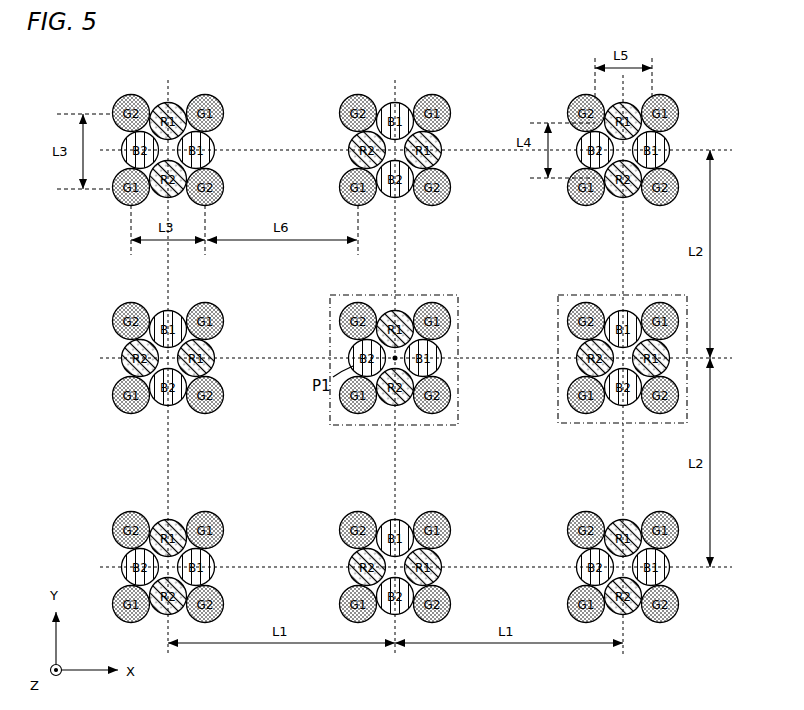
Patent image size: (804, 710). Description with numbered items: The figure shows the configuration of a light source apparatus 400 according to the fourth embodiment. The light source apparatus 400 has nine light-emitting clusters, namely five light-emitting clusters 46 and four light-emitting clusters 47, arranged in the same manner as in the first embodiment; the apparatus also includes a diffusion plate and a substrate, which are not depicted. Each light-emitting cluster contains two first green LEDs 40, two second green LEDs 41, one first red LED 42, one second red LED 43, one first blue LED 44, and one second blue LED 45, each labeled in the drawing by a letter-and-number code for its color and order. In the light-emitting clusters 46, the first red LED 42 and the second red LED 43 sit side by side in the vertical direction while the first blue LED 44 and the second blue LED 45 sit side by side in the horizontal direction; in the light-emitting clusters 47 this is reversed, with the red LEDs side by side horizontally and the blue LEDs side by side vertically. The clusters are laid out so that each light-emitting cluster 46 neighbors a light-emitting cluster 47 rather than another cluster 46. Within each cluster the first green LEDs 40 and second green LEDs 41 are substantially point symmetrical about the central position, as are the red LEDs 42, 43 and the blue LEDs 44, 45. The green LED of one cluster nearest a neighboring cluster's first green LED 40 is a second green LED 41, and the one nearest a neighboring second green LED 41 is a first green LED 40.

The first green LED 40 is at (451, 325).
The second green LED 41 is at (451, 400).
The first red LED 42 is at (398, 311).
The second red LED 43 is at (392, 406).
The first blue LED 44 is at (440, 363).
The second blue LED 45 is at (348, 353).
The light-emitting cluster 46 is at (447, 425).
The light-emitting cluster 47 is at (575, 424).
The light source apparatus 400 is at (695, 627).